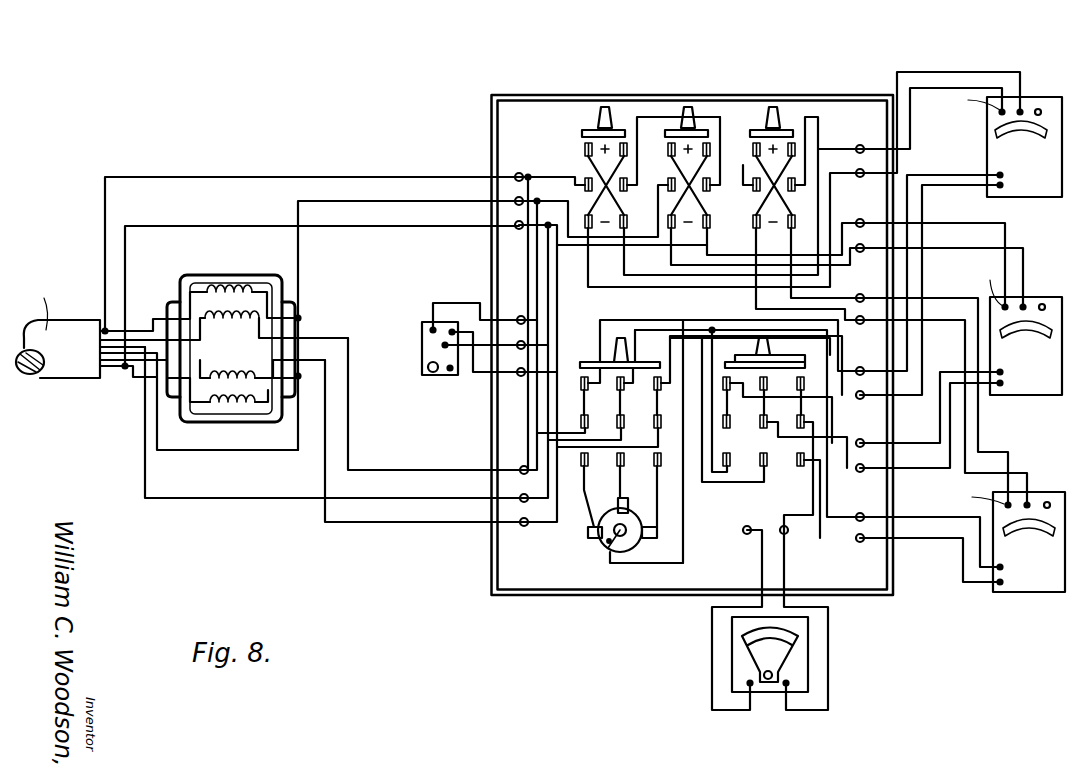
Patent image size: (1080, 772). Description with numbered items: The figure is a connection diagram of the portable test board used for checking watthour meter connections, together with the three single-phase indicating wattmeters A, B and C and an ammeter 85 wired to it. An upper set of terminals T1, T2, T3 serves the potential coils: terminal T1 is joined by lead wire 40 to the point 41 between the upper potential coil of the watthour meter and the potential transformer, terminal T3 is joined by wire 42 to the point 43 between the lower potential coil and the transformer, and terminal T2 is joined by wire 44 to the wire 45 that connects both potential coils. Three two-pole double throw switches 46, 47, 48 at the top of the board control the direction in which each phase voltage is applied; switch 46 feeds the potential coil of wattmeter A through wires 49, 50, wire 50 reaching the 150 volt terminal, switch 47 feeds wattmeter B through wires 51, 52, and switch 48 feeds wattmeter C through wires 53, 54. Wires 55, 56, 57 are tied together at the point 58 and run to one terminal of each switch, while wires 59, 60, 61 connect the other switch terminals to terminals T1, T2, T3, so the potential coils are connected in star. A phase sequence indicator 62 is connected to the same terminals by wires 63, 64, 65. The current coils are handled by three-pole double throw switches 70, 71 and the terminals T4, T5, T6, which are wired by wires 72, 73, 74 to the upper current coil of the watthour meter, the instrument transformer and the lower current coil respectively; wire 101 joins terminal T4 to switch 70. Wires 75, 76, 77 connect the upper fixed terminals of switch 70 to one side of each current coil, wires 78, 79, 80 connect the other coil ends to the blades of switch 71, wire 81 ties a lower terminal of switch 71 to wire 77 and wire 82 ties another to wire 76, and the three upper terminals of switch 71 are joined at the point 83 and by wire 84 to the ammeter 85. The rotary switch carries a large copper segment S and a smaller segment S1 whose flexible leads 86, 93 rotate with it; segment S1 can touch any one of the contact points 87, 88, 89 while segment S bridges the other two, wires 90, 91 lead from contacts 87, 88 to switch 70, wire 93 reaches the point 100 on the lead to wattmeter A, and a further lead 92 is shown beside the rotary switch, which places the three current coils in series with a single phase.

The lead wire 40 is at (345, 177).
The point 41 is at (104, 330).
The wire 42 is at (393, 227).
The point 43 is at (125, 366).
The wire 44 is at (372, 201).
The wire 45 is at (302, 318).
The two-pole double throw switch 46 is at (603, 107).
The two-pole double throw switch 47 is at (688, 107).
The two-pole double throw switch 48 is at (773, 107).
The wire 49 is at (968, 87).
The wire 50 is at (897, 72).
The wire 51 is at (1008, 228).
The wire 52 is at (1025, 275).
The wire 53 is at (943, 298).
The wire 54 is at (935, 320).
The wire 55 is at (643, 117).
The wire 56 is at (745, 140).
The wire 57 is at (808, 120).
The point 58 is at (720, 130).
The wire 59 is at (563, 175).
The wire 60 is at (558, 205).
The wire 61 is at (572, 246).
The phase sequence indicator 62 is at (422, 340).
The wire 63 is at (460, 370).
The wire 64 is at (473, 332).
The wire 65 is at (480, 303).
The three-pole double throw switch 70 is at (582, 362).
The three-pole double throw switch 71 is at (760, 340).
The wire 72 is at (428, 470).
The wire 73 is at (442, 498).
The wire 74 is at (432, 522).
The wire 75 is at (600, 320).
The wire 76 is at (912, 443).
The wire 77 is at (912, 517).
The wire 78 is at (955, 186).
The wire 79 is at (950, 422).
The wire 80 is at (915, 538).
The wire 81 is at (732, 485).
The wire 82 is at (722, 475).
The point 83 is at (775, 352).
The wire 84 is at (808, 518).
The ammeter 85 is at (796, 685).
The lead wire 86 is at (645, 565).
The contact point 87 is at (618, 548).
The contact point 88 is at (633, 489).
The contact point 89 is at (656, 535).
The wire 90 is at (596, 540).
The wire 91 is at (622, 496).
The conductor 92 is at (682, 488).
The lead wire 93 is at (682, 520).
The point 100 is at (688, 328).
The wire 101 is at (555, 432).
The 150 volt terminal 150 is at (1022, 108).
The terminal T1 is at (515, 175).
The terminal T2 is at (515, 200).
The terminal T3 is at (515, 224).
The terminal T4 is at (524, 466).
The terminal T5 is at (550, 500).
The terminal T6 is at (524, 526).
The copper segment S1 is at (598, 526).
The copper segment S is at (610, 575).